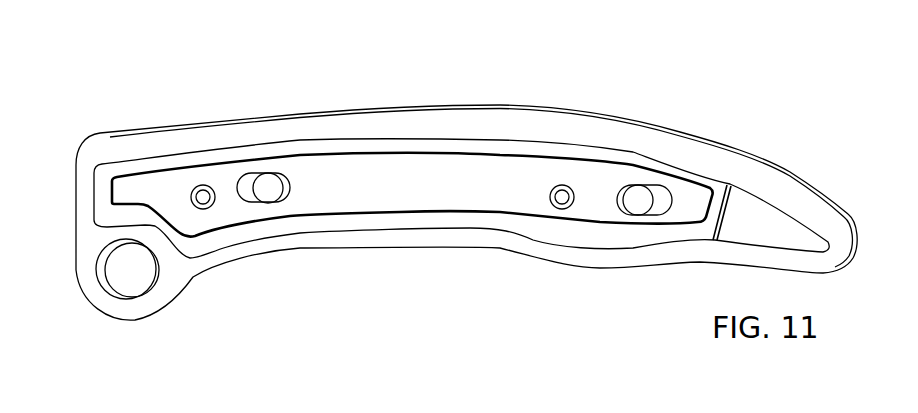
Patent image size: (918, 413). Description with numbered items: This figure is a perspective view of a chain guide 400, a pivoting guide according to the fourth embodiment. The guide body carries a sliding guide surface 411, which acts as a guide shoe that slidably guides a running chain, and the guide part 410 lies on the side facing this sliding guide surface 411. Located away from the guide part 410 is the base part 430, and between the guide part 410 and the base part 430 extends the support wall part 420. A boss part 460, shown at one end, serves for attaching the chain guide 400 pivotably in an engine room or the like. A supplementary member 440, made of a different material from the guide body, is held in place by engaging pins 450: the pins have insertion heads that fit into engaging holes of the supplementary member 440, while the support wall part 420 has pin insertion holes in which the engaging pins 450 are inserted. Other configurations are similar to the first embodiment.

The chain guide 400 is at (127, 78).
The guide part 410 is at (357, 128).
The sliding guide surface 411 is at (487, 108).
The support wall part 420 is at (762, 223).
The base part 430 is at (387, 237).
The supplementary member 440 is at (430, 190).
The engaging pins 450 is at (268, 188).
The boss part 460 is at (162, 292).